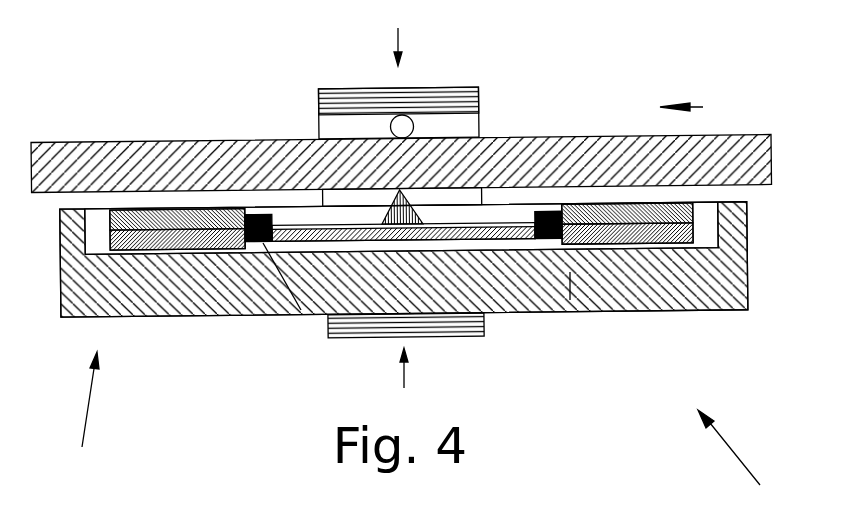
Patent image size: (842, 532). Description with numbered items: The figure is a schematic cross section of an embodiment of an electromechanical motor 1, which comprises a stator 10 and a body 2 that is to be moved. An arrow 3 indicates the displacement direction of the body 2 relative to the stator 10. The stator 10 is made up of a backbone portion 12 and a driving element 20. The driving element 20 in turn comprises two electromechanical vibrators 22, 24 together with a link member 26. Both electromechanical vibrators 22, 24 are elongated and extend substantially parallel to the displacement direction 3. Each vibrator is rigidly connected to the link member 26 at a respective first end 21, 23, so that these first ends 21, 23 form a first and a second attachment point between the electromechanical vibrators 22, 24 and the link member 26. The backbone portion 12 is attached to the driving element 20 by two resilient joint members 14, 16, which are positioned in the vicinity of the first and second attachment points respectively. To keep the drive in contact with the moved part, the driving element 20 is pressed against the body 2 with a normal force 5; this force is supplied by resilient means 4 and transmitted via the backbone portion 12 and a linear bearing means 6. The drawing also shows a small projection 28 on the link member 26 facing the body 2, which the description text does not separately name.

The electromechanical motor 1 is at (738, 464).
The body 2 is at (136, 152).
The displacement direction 3 is at (683, 93).
The resilient means 4 is at (357, 98).
The normal force 5 is at (412, 208).
The linear bearing means 6 is at (406, 118).
The stator 10 is at (83, 417).
The backbone portion 12 is at (720, 302).
The resilient joint member 14 is at (302, 312).
The resilient joint member 16 is at (547, 241).
The driving element 20 is at (177, 205).
The first end 21 is at (263, 244).
The electromechanical vibrator 22 is at (168, 234).
The first end 23 is at (570, 300).
The electromechanical vibrator 24 is at (633, 244).
The link member 26 is at (482, 225).
The force transfer tip 28 is at (392, 205).